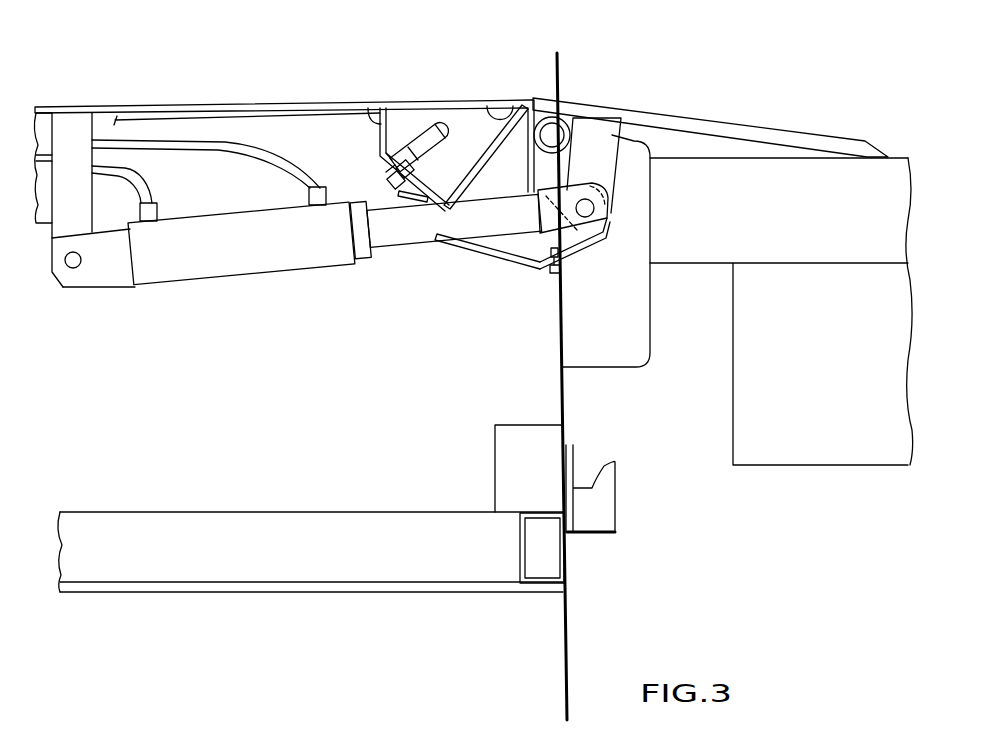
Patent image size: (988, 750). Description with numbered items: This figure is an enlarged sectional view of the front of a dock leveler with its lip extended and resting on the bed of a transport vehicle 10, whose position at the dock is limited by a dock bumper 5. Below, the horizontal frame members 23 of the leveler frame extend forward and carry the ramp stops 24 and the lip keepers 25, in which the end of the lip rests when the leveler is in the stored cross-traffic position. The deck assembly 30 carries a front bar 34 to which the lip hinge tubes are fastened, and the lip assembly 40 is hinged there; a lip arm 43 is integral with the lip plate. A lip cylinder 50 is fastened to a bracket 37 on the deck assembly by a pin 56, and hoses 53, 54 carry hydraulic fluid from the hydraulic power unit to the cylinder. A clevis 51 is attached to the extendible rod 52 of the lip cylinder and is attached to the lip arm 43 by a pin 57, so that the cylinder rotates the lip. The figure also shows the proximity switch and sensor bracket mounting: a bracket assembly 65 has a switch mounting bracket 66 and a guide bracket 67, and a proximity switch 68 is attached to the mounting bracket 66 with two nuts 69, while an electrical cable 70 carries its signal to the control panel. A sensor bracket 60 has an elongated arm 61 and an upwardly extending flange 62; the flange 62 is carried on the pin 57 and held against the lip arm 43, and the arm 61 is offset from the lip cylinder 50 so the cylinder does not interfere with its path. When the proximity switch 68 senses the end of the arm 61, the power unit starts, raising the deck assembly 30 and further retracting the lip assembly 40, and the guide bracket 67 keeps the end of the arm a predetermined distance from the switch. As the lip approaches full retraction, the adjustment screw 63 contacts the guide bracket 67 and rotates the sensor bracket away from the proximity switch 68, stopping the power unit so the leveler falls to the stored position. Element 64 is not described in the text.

The dock bumper 5 is at (637, 348).
The transport vehicle 10 is at (813, 158).
The horizontal frame member 23 is at (233, 528).
The ramp stop 24 is at (497, 457).
The lip keeper 25 is at (600, 522).
The deck assembly 30 is at (262, 101).
The front bar 34 is at (530, 173).
The bracket 37 is at (83, 118).
The lip assembly 40 is at (720, 123).
The lip arm 43 is at (610, 132).
The lip cylinder 50 is at (256, 272).
The clevis 51 is at (528, 242).
The extendible rod 52 is at (393, 245).
The hose 53 is at (132, 166).
The hose 54 is at (290, 162).
The pin 56 is at (76, 270).
The pin 57 is at (592, 211).
The sensor bracket 60 is at (482, 254).
The elongated arm 61 is at (479, 273).
The upwardly extending flange 62 is at (548, 178).
The adjustment screw 63 is at (552, 278).
The bolt 64 is at (567, 270).
The bracket assembly 65 is at (373, 107).
The switch mounting bracket 66 is at (381, 80).
The guide bracket 67 is at (505, 103).
The proximity switch 68 is at (390, 182).
The nut 69 is at (385, 165).
The electrical cable 70 is at (460, 104).